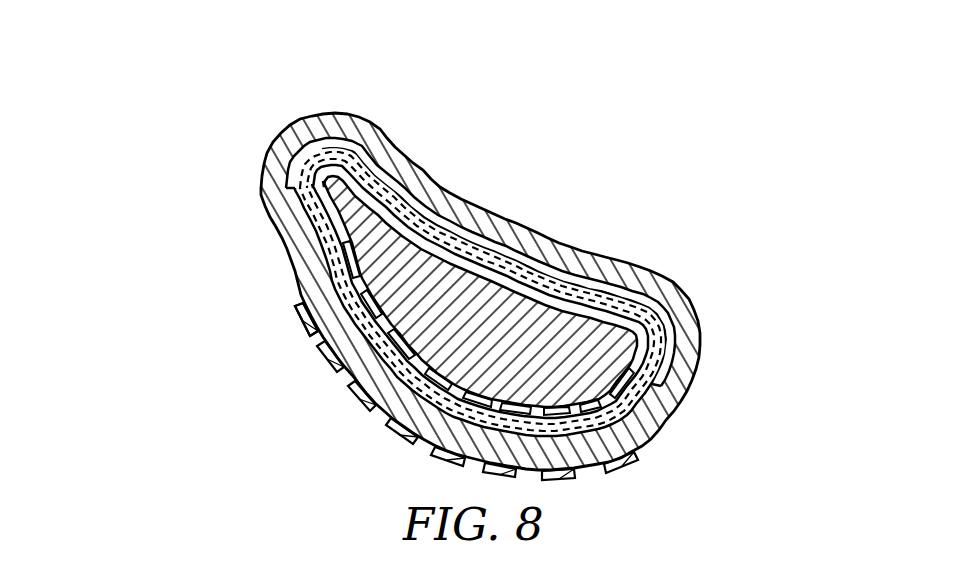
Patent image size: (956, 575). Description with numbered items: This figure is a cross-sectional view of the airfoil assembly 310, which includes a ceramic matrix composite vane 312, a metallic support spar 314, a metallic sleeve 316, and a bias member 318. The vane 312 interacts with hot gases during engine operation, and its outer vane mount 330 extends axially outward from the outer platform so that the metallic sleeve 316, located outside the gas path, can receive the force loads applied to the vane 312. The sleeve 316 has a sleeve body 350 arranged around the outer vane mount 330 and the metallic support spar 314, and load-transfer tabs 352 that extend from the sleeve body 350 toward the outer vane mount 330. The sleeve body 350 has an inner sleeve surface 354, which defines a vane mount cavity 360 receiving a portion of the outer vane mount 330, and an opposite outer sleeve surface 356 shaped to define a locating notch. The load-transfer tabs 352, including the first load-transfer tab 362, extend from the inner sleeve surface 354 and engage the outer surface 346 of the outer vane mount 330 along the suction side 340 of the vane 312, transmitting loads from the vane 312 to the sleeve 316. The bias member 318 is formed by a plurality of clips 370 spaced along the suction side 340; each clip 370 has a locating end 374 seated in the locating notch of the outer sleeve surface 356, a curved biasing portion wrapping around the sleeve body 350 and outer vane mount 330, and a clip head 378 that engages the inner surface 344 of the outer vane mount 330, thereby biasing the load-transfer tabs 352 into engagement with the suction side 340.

The airfoil assembly 310 is at (190, 123).
The ceramic matrix composite vane 312 is at (290, 273).
The metallic support spar 314 is at (514, 283).
The metallic sleeve 316 is at (722, 327).
The bias member 318 is at (625, 480).
The outer vane mount 330 is at (296, 261).
The suction side 340 is at (312, 275).
The inner surface 344 is at (288, 183).
The outer surface 346 is at (310, 240).
The sleeve body 350 is at (610, 250).
The load-transfer tabs 352 is at (680, 410).
The inner sleeve surface 354 is at (632, 292).
The outer sleeve surface 356 is at (638, 264).
The vane mount cavity 360 is at (323, 142).
The first load-transfer tab 362 is at (662, 386).
The clip 370 is at (598, 482).
The locating end 374 is at (307, 323).
The clip head 378 is at (384, 267).